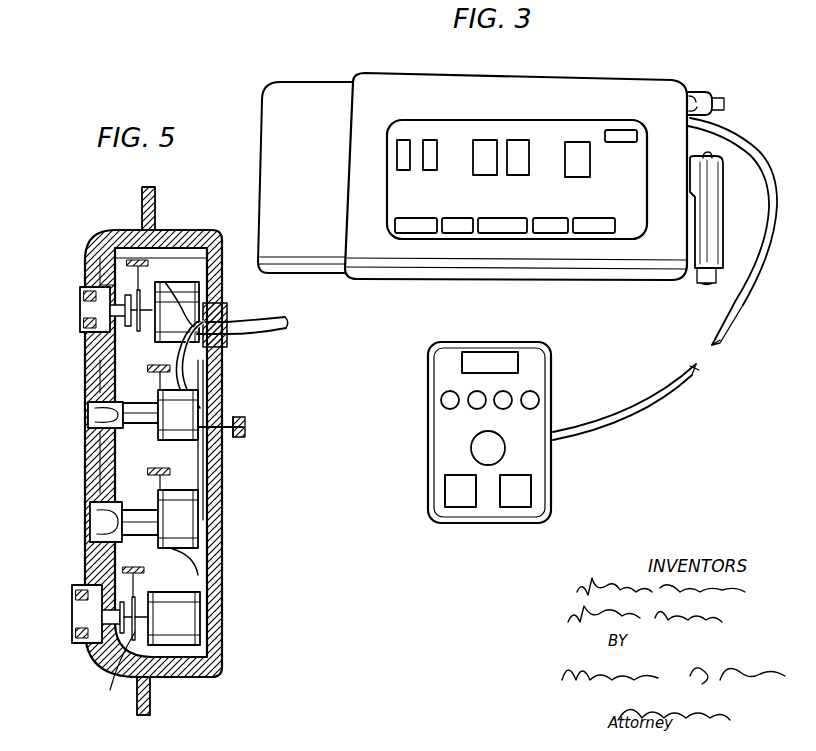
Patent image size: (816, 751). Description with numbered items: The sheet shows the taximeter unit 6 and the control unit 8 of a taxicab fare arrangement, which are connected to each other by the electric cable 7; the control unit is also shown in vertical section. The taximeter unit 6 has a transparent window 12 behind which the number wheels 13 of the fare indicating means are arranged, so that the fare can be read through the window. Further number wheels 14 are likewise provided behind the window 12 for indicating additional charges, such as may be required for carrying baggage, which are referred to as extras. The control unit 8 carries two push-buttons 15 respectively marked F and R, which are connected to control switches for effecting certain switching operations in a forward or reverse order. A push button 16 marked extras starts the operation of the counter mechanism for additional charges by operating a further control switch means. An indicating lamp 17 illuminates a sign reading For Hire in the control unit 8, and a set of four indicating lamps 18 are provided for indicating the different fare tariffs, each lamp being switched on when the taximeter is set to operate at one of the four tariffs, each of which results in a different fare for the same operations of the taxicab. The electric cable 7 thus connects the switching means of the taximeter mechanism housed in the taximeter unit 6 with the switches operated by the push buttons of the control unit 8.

In FIG. 3, the taximeter unit 6 is at (662, 92).
In FIG. 3, the electric cable 7 is at (715, 367).
In FIG. 5, the electric cable 7 is at (270, 335).
In FIG. 3, the control unit 8 is at (437, 438).
In FIG. 5, the control unit 8 is at (118, 240).
In FIG. 3, the transparent window 12 is at (627, 228).
In FIG. 3, the number wheels 13 is at (492, 175).
In FIG. 3, the number wheels 14 is at (405, 170).
In FIG. 3, the push-buttons 15 is at (470, 507).
In FIG. 5, the push-buttons 15 is at (76, 617).
In FIG. 3, the push button 16 is at (515, 356).
In FIG. 5, the push button 16 is at (85, 318).
In FIG. 3, the indicating lamp 17 is at (497, 461).
In FIG. 5, the indicating lamp 17 is at (90, 525).
In FIG. 3, the indicating lamps 18 is at (470, 393).
In FIG. 5, the indicating lamps 18 is at (88, 416).